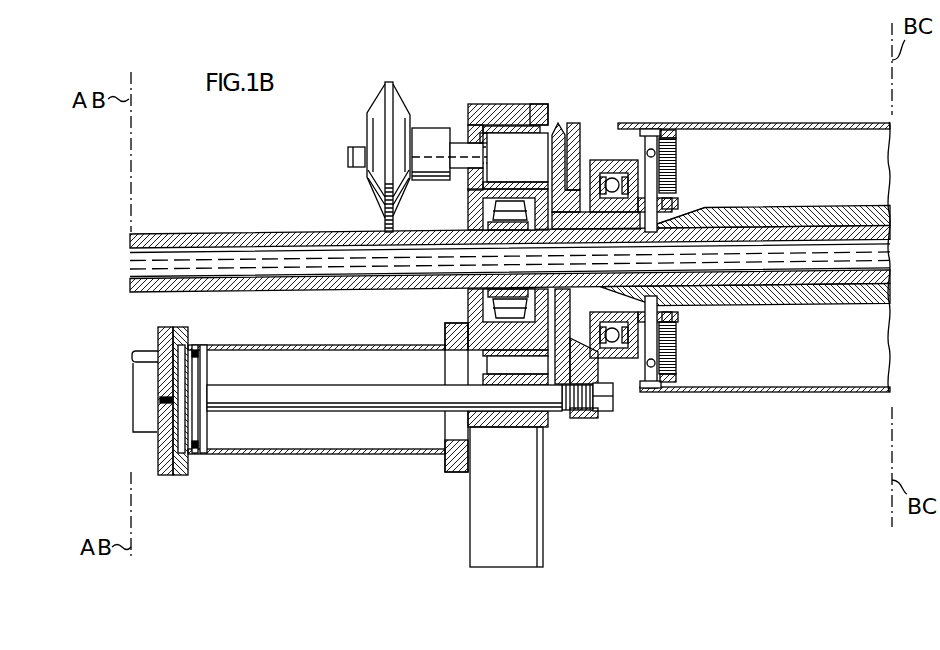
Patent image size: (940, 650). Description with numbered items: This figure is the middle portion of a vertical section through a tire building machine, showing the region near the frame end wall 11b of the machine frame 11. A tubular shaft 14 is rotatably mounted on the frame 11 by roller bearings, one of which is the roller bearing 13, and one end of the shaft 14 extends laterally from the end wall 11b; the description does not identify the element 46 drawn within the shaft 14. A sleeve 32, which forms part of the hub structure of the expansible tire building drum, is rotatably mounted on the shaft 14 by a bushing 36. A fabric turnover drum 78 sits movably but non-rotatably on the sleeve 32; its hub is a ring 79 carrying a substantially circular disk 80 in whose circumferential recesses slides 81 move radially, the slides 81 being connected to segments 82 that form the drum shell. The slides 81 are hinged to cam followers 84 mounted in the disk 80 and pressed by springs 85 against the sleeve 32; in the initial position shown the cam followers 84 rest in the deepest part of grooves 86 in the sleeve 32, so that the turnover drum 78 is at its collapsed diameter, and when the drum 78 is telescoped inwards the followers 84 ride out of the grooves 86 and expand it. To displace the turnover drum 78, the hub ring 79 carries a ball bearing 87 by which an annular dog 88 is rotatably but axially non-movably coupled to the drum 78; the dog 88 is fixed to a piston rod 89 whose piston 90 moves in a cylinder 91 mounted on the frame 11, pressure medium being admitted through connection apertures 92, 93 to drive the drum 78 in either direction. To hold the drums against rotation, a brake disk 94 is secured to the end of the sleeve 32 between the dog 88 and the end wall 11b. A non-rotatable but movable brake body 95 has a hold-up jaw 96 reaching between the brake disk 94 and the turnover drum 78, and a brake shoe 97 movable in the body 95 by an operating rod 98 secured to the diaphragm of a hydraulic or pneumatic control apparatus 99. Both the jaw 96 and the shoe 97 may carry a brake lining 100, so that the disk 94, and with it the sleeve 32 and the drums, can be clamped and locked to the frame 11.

The frame 11 is at (476, 104).
The frame end wall 11b is at (542, 495).
The roller bearing 13 is at (468, 217).
The tubular shaft 14 is at (270, 241).
The sleeve 32 is at (755, 214).
The bushing 36 is at (577, 290).
The cable core 46 is at (220, 258).
The fabric turnover drum 78 is at (718, 111).
The ring 79 is at (678, 204).
The disk 80 is at (676, 168).
The slides 81 is at (648, 150).
The segments 82 is at (725, 387).
The cam followers 84 is at (677, 360).
The springs 85 is at (677, 338).
The grooves 86 is at (708, 212).
The ball bearing 87 is at (628, 172).
The annular dog 88 is at (627, 357).
The piston rod 89 is at (567, 411).
The piston 90 is at (203, 370).
The cylinder 91 is at (342, 454).
The connection aperture 92 is at (160, 400).
The connection aperture 93 is at (474, 432).
The brake disk 94 is at (562, 395).
The body 95 is at (540, 104).
The hold-up jaw 96 is at (584, 145).
The brake shoe 97 is at (514, 144).
The operating rod 98 is at (478, 127).
The control apparatus 99 is at (371, 107).
The brake lining 100 is at (574, 124).